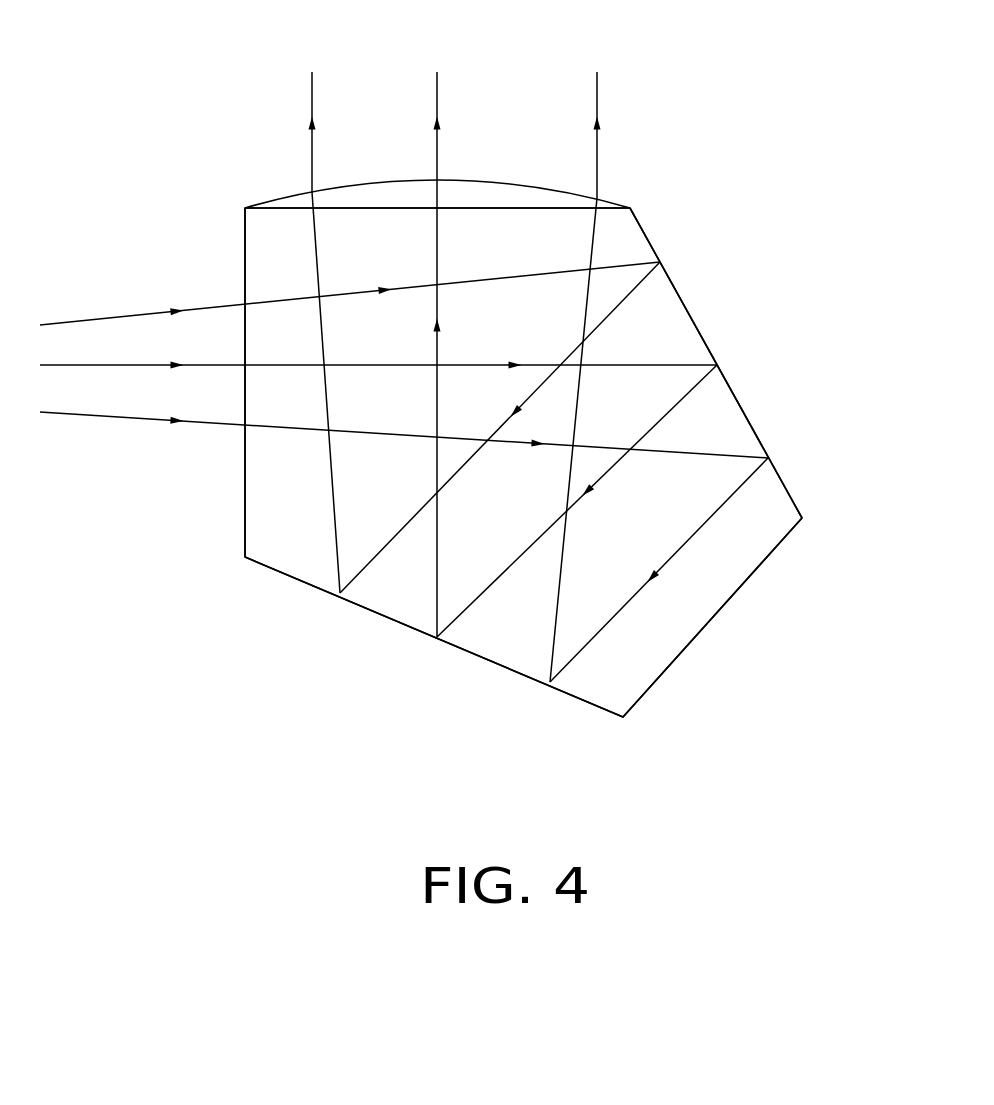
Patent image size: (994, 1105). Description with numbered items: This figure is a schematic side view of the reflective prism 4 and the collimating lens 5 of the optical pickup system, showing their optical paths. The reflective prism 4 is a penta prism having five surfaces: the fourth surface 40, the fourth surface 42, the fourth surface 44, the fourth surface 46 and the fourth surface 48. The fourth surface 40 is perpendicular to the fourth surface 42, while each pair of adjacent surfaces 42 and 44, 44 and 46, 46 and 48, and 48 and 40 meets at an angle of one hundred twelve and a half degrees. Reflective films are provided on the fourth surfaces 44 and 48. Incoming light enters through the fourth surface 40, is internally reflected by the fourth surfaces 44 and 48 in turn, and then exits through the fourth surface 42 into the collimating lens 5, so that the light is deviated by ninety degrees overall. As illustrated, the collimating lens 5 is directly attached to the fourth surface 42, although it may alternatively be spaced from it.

The reflective prism 4 is at (668, 335).
The collimating lens 5 is at (482, 194).
The fourth surface 40 is at (243, 505).
The fourth surface 42 is at (358, 210).
The fourth surface 44 is at (788, 488).
The fourth surface 46 is at (732, 602).
The fourth surface 48 is at (468, 653).